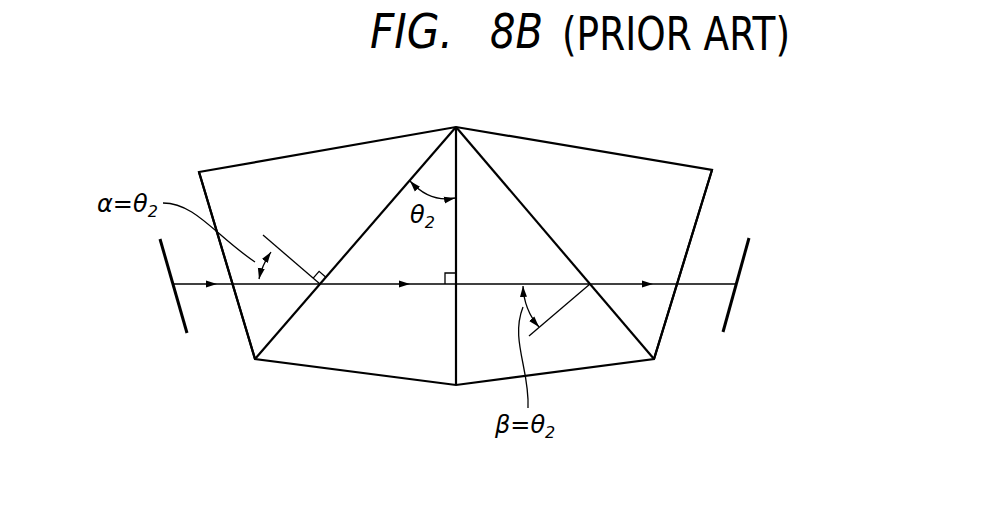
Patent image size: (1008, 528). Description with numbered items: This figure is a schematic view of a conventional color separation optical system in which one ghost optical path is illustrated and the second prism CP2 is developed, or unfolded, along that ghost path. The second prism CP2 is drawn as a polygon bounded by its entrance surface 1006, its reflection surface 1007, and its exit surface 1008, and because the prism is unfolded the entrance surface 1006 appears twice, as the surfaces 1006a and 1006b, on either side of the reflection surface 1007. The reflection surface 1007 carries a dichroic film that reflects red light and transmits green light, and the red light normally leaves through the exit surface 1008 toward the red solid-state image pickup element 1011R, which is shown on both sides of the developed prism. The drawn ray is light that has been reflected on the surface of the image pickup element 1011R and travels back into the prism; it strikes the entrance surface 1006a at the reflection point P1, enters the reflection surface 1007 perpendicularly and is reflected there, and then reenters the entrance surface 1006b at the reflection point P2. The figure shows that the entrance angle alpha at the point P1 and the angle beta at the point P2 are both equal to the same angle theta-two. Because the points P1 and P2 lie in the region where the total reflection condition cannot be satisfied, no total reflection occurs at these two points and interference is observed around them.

The entrance surface 1006 is at (444, 312).
The entrance surface 1006a is at (274, 339).
The entrance surface 1006b is at (624, 322).
The reflection surface 1007 is at (457, 168).
The exit surface 1008 is at (243, 327).
The red solid-state image pickup element 1011R is at (177, 305).
The second prism CP2 is at (390, 222).
The reflection point P1 is at (322, 287).
The reflection point P2 is at (590, 283).